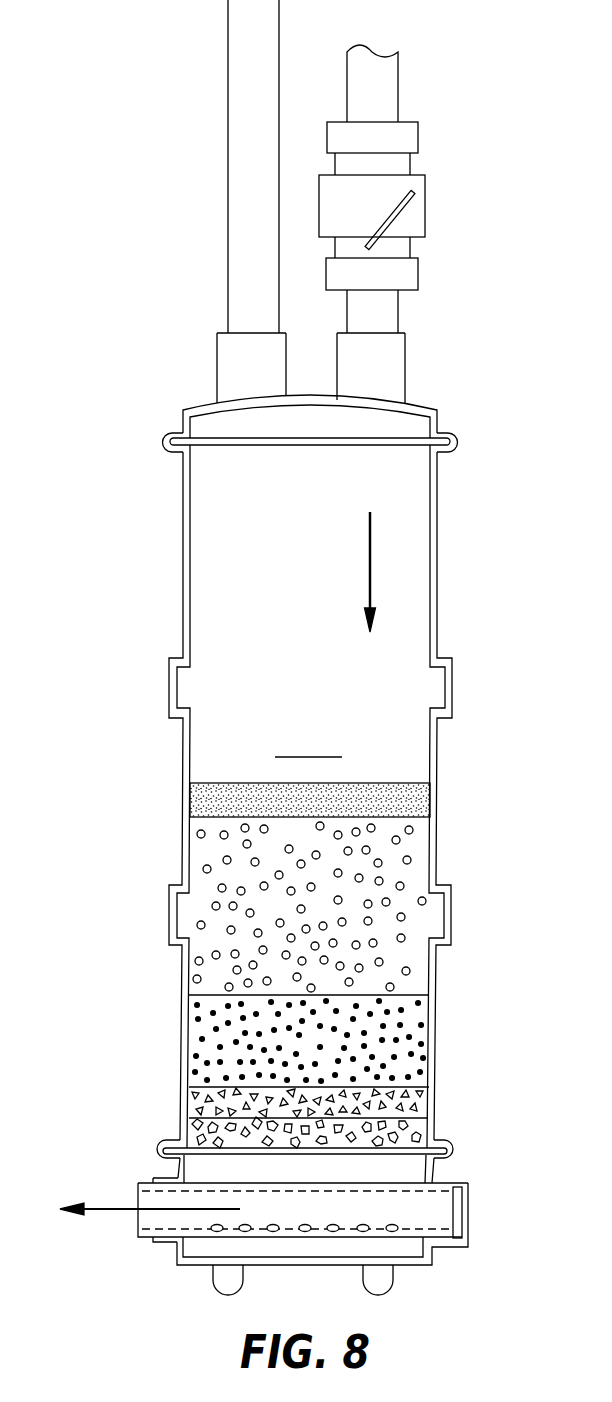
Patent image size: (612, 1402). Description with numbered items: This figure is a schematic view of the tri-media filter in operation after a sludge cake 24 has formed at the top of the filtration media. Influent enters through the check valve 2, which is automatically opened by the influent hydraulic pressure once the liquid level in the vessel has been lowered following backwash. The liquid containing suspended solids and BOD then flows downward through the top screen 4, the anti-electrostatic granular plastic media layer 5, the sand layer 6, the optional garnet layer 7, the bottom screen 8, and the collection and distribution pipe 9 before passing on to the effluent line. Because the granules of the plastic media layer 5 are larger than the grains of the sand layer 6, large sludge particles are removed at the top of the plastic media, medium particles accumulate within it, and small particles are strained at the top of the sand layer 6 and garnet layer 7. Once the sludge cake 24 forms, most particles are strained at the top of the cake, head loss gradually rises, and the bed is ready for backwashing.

The check valve 2 is at (425, 204).
The top screen 4 is at (398, 450).
The sludge cake 24 is at (413, 806).
The anti-electrostatic granular plastic media layer 5 is at (387, 855).
The sand layer 6 is at (387, 1041).
The garnet layer 7 is at (405, 1103).
The bottom screen 8 is at (222, 1154).
The collection and distribution pipe 9 is at (143, 1238).